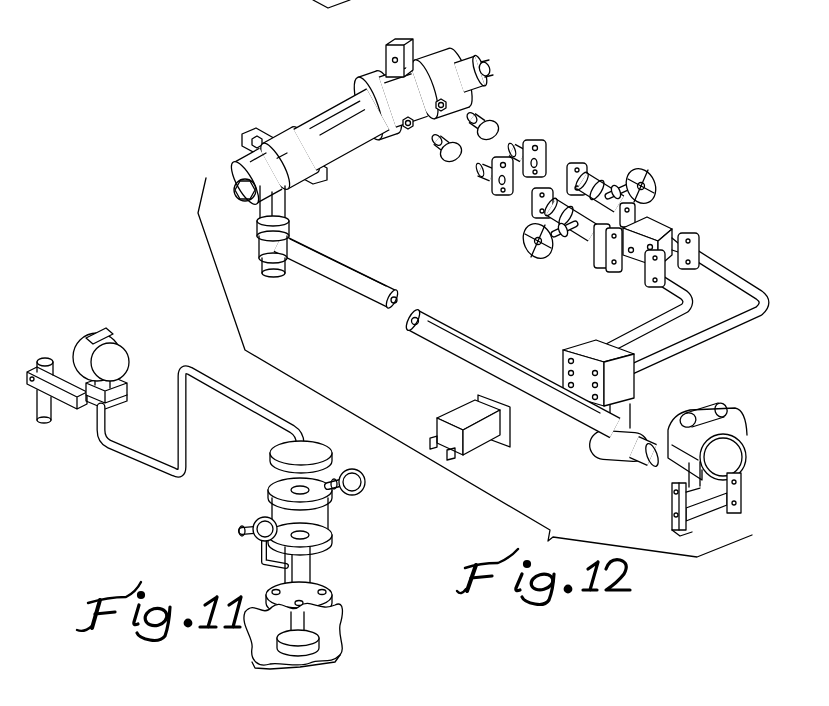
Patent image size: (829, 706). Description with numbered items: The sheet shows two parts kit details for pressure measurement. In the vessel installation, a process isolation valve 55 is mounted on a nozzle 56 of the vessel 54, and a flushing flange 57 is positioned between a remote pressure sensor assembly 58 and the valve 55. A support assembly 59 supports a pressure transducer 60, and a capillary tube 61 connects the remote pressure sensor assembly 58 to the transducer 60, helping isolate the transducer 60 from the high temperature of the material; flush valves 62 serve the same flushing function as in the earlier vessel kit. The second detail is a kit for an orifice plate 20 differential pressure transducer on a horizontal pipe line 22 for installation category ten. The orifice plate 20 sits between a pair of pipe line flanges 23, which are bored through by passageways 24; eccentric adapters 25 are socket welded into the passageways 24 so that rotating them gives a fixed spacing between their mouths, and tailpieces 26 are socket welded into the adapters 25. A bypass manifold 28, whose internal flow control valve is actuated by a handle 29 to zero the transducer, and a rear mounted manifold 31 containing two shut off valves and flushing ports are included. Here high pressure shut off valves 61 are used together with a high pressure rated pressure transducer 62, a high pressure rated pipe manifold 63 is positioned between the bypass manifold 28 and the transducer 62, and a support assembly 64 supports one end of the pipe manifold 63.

In FIG. 12, the orifice plate 20 is at (386, 51).
In FIG. 12, the horizontal pipe line 22 is at (493, 70).
In FIG. 12, the pipe line flanges 23 is at (366, 86).
In FIG. 12, the passageways 24 is at (449, 104).
In FIG. 12, the eccentric adapters 25 is at (487, 124).
In FIG. 12, the tailpieces 26 is at (550, 153).
In FIG. 12, the bypass manifold 28 is at (660, 220).
In FIG. 12, the handle 29 is at (687, 230).
In FIG. 12, the rear mounted manifold 31 is at (488, 457).
In FIG. 11, the vessel 54 is at (328, 653).
In FIG. 11, the process isolation valve 55 is at (311, 571).
In FIG. 11, the nozzle 56 is at (305, 631).
In FIG. 11, the flushing flange 57 is at (328, 511).
In FIG. 11, the remote pressure sensor assembly 58 is at (283, 451).
In FIG. 11, the support assembly 59 is at (70, 403).
In FIG. 11, the pressure transducer 60 is at (123, 347).
In FIG. 12, the high pressure shut off valves 61 is at (606, 192).
In FIG. 12, the high pressure rated pressure transducer 62 is at (726, 420).
In FIG. 11, the high pressure rated pressure transducer 62 is at (350, 469).
In FIG. 12, the high pressure rated pipe manifold 63 is at (658, 322).
In FIG. 12, the support assembly 64 is at (278, 208).